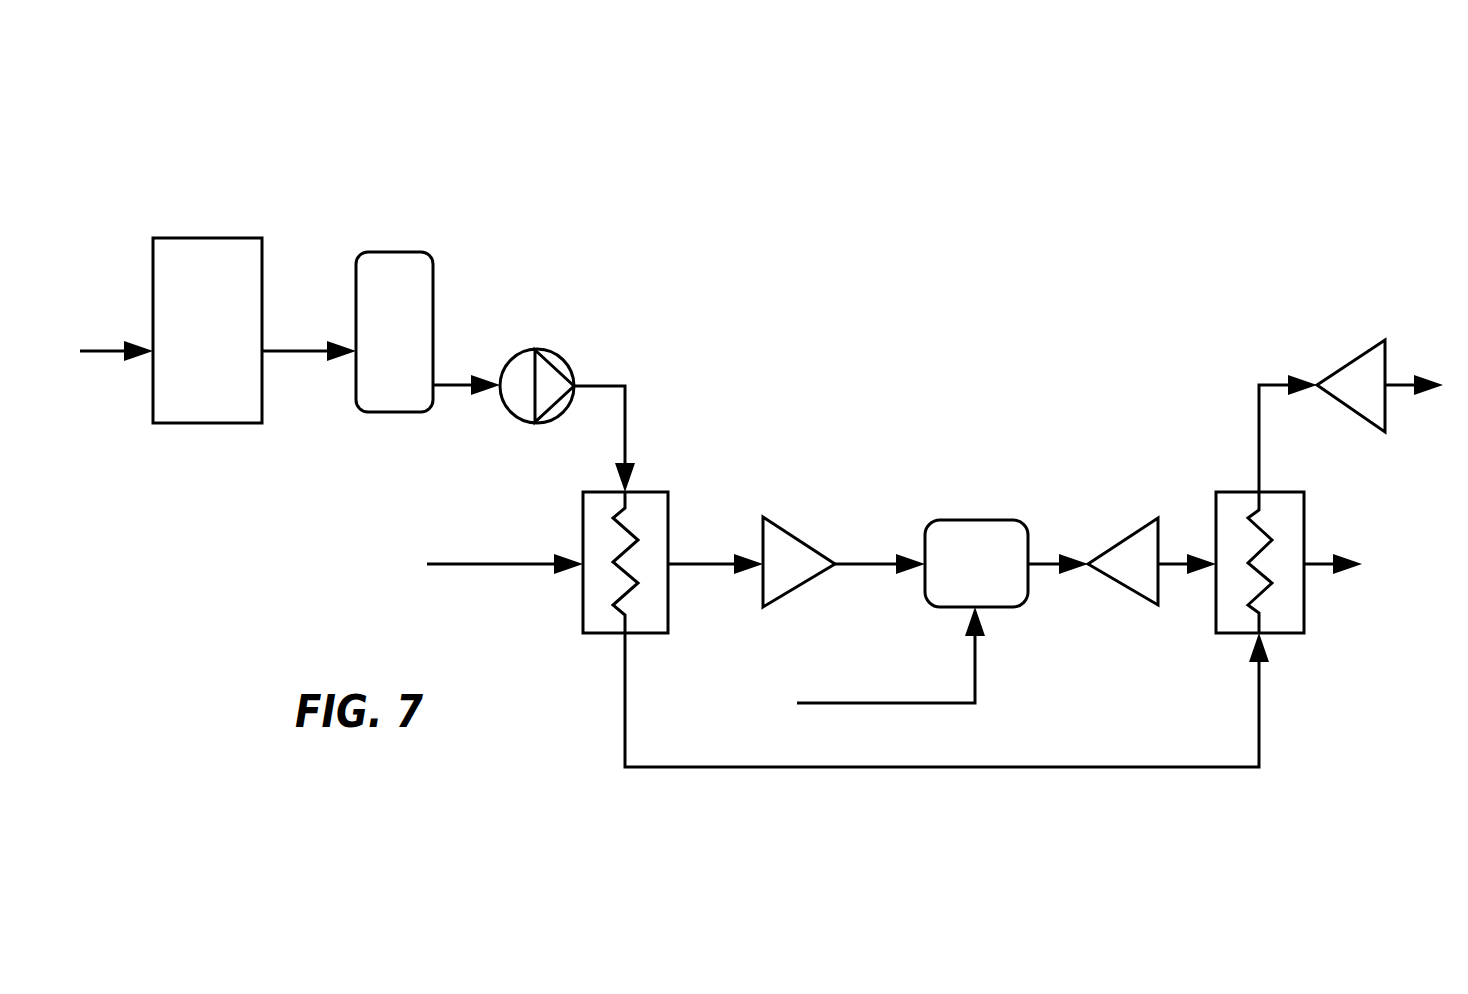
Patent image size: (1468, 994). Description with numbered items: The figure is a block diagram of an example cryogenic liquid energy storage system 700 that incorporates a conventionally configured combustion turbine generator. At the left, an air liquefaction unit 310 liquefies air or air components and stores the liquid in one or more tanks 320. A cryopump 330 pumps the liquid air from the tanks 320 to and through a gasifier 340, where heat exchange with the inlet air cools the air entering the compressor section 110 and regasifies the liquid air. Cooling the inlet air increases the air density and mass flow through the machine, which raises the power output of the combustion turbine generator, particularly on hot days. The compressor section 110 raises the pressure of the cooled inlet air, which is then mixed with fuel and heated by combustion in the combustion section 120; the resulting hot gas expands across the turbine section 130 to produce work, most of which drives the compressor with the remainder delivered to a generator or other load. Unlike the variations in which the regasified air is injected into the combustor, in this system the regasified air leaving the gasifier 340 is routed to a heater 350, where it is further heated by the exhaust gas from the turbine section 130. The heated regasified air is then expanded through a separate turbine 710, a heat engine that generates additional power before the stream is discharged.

The cryogenic liquid energy storage system 700 is at (1082, 227).
The air liquefaction unit 310 is at (153, 285).
The tank 320 is at (356, 290).
The cryopump 330 is at (509, 414).
The gasifier 340 is at (583, 592).
The compressor section 110 is at (763, 578).
The combustion section 120 is at (925, 578).
The turbine section 130 is at (1110, 576).
The heater 350 is at (1216, 610).
The turbine 710 is at (1334, 400).